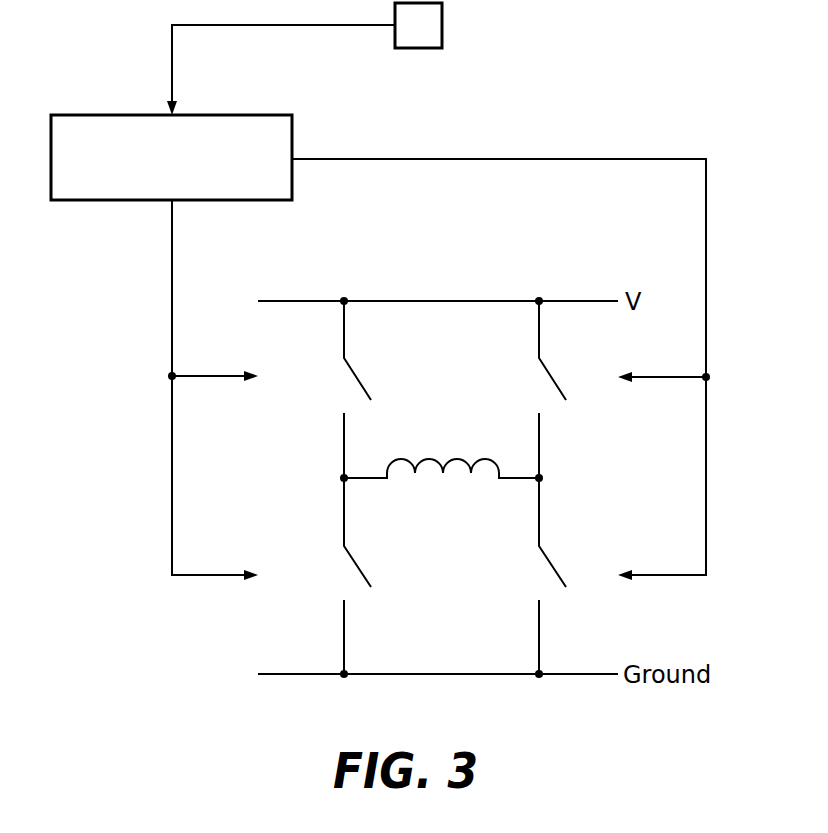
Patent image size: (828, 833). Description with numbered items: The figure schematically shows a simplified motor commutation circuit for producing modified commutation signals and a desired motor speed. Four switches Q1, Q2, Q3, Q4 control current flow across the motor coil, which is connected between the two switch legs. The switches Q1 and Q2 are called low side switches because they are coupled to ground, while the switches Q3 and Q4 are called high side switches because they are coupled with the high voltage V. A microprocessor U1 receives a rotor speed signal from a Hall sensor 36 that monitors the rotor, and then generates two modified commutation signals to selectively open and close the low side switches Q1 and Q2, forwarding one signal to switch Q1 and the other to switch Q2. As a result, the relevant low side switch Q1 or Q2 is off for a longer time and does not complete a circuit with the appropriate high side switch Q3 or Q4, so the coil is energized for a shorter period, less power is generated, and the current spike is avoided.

The microprocessor U1 is at (103, 115).
The Hall sensor 36 is at (442, 27).
The low side switch Q1 is at (339, 576).
The low side switch Q2 is at (533, 576).
The high side switch Q3 is at (339, 389).
The high side switch Q4 is at (533, 389).